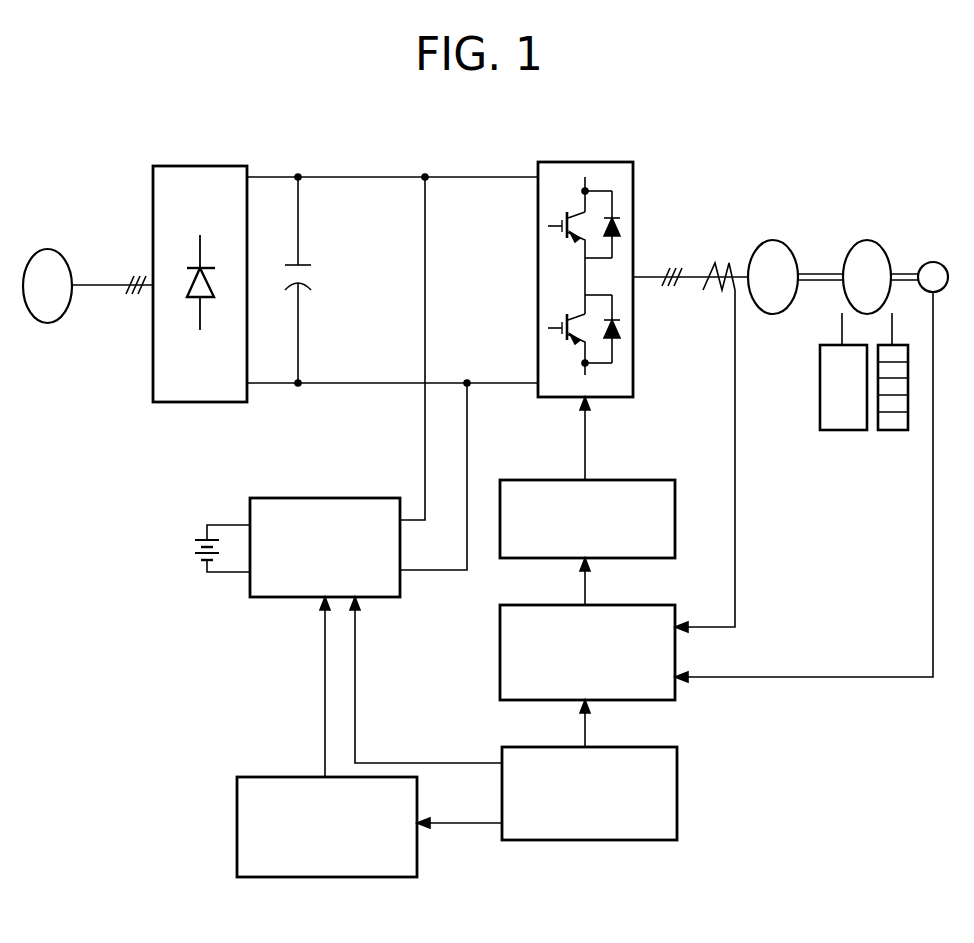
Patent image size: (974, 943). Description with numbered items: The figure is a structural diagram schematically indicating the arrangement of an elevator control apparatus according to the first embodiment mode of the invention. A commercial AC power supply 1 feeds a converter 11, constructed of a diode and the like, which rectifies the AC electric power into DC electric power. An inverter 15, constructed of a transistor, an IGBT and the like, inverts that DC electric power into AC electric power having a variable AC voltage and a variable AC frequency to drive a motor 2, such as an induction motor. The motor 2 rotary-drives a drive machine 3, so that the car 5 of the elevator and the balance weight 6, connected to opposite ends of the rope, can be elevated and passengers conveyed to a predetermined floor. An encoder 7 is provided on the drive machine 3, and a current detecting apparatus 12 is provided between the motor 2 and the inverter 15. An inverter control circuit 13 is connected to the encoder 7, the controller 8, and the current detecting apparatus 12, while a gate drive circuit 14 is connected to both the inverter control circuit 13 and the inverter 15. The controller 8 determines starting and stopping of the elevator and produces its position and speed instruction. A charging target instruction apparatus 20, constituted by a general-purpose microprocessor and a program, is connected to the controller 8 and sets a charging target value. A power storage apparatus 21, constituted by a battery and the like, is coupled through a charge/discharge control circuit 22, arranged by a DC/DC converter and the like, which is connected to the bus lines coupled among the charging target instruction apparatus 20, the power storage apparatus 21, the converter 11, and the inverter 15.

The commercial AC power supply 1 is at (47, 248).
The converter 11 is at (153, 375).
The inverter 15 is at (600, 162).
The current detecting apparatus 12 is at (718, 263).
The motor 2 is at (773, 240).
The drive machine 3 is at (867, 240).
The encoder 7 is at (933, 262).
The car 5 is at (820, 385).
The balance weight 6 is at (892, 432).
The charge/discharge control circuit 22 is at (352, 498).
The power storage apparatus 21 is at (190, 547).
The gate drive circuit 14 is at (645, 480).
The inverter control circuit 13 is at (662, 605).
The controller 8 is at (677, 775).
The charging target instruction apparatus 20 is at (262, 777).